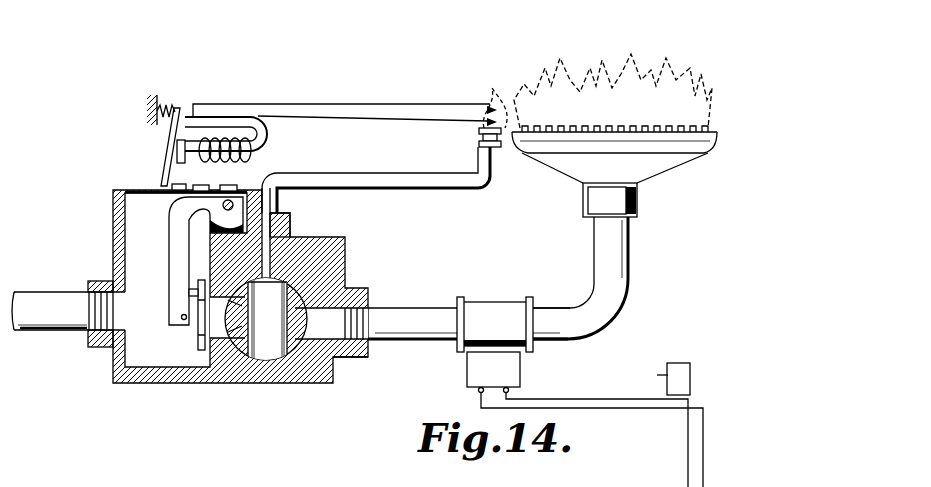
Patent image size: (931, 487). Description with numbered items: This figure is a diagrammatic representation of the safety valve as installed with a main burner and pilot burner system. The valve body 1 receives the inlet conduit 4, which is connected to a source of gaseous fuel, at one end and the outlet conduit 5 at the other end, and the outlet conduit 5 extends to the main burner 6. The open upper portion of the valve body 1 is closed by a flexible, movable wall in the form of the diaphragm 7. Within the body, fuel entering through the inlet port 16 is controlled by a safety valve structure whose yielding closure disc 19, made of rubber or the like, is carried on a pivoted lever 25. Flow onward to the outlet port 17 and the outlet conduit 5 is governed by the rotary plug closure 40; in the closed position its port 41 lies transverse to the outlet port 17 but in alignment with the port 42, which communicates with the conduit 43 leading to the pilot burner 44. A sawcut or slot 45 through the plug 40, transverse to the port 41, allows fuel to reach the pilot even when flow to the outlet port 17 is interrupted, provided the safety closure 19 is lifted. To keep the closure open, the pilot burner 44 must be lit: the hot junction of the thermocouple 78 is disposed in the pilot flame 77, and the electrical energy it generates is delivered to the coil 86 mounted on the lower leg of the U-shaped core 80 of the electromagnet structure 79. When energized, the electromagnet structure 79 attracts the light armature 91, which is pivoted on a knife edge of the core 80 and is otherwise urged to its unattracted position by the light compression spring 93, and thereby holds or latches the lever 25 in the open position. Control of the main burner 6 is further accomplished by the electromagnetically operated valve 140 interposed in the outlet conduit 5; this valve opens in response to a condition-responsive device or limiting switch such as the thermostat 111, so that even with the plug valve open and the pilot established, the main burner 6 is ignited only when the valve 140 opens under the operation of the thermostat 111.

The valve body 1 is at (356, 265).
The inlet conduit 4 is at (48, 294).
The outlet conduit 5 is at (420, 309).
The main burner 6 is at (665, 165).
The diaphragm 7 is at (142, 191).
The inlet port 16 is at (205, 318).
The outlet port 17 is at (336, 352).
The yielding valve closure disc 19 is at (200, 346).
The lever 25 is at (162, 229).
The rotary plug closure 40 is at (292, 356).
The port 41 is at (274, 285).
The port 42 is at (272, 237).
The conduit 43 is at (364, 175).
The pilot burner 44 is at (478, 140).
The slot 45 is at (242, 310).
The pilot flame 77 is at (503, 92).
The thermocouple 78 is at (485, 116).
The electromagnet structure 79 is at (275, 118).
The U-shaped core 80 is at (272, 143).
The coil 86 is at (221, 128).
The armature 91 is at (172, 144).
The compression spring 93 is at (166, 104).
The thermostat 111 is at (686, 363).
The electromagnetically operated valve 140 is at (503, 305).